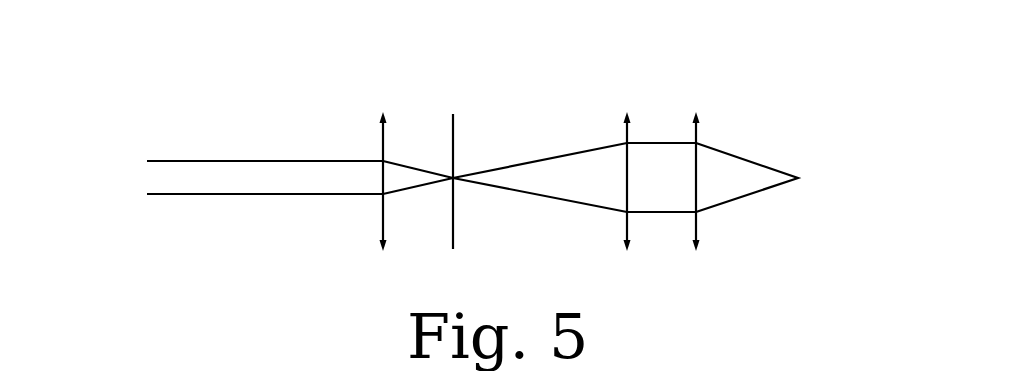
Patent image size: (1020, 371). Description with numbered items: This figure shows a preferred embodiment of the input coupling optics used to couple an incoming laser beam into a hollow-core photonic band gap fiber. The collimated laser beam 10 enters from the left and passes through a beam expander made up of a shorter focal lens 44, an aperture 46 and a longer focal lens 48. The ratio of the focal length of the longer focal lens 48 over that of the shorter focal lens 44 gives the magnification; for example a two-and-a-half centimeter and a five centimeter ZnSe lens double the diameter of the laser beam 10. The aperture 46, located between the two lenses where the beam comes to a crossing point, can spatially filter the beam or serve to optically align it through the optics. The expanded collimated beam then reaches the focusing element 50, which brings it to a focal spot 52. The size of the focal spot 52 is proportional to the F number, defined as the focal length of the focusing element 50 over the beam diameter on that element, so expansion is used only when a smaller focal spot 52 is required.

The collimated laser beam 10 is at (245, 160).
The shorter focal lens 44 is at (380, 128).
The aperture 46 is at (455, 207).
The longer focal lens 48 is at (623, 128).
The focusing element 50 is at (693, 127).
The focal spot 52 is at (798, 182).